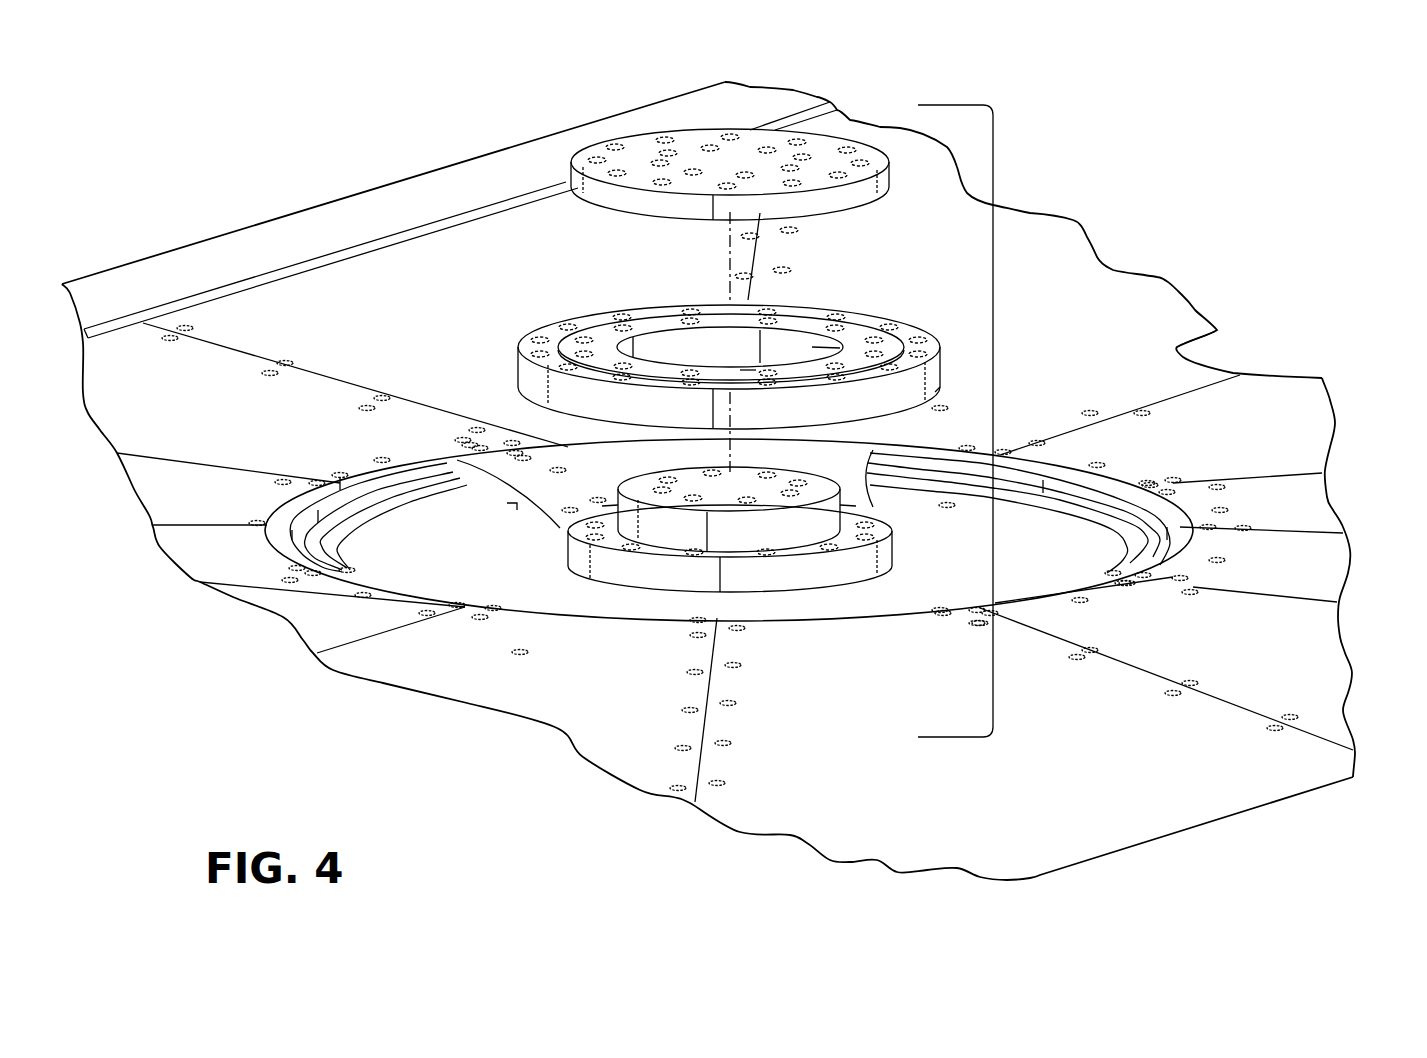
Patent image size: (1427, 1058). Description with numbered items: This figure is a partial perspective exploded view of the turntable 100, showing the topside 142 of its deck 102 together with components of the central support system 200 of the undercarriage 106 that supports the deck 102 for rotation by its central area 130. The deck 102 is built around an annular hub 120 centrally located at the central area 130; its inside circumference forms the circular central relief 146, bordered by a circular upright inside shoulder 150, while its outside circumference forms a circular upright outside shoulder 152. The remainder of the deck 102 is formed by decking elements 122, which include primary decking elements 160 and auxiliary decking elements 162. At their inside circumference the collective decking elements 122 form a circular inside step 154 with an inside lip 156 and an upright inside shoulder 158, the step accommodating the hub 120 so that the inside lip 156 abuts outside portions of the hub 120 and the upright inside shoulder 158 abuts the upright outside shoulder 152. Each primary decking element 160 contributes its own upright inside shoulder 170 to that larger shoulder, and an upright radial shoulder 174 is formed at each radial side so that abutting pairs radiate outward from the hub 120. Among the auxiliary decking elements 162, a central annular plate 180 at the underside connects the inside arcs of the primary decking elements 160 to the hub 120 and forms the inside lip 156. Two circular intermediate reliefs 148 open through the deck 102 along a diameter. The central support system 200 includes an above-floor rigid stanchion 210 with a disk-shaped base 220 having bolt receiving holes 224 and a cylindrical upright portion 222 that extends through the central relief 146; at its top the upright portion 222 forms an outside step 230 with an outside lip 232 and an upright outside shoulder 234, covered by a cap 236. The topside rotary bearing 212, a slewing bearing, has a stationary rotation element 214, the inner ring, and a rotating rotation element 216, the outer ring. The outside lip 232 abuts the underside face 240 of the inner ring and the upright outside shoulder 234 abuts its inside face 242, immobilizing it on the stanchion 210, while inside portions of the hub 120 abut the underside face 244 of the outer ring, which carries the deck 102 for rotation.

The turntable 100 is at (1018, 173).
The deck 102 is at (1090, 228).
The undercarriage 106 is at (1009, 421).
The central support system 200 is at (997, 351).
The hub 120 is at (556, 455).
The decking elements 122 is at (1300, 493).
The central area 130 is at (1117, 454).
The topside 142 is at (1105, 306).
The central relief 146 is at (583, 508).
The intermediate reliefs 148 is at (1215, 356).
The upright inside shoulder 150 is at (548, 508).
The upright outside shoulder 152 is at (457, 462).
The inside step 154 is at (1111, 490).
The inside lip 156 is at (1140, 490).
The upright inside shoulder 158 is at (1165, 478).
The primary decking elements 160 is at (1312, 487).
The auxiliary decking elements 162 is at (1262, 587).
The upright inside shoulder 170 is at (1177, 512).
The upright radial shoulder 174 is at (1133, 497).
The central annular plate 180 is at (1193, 540).
The stanchion 210 is at (770, 598).
The topside rotary bearing 212 is at (810, 307).
The stationary rotation element 214 is at (830, 330).
The rotating rotation element 216 is at (865, 322).
The base 220 is at (807, 605).
The upright portion 222 is at (767, 577).
The bolt receiving holes 224 is at (355, 572).
The outside step 230 is at (843, 507).
The outside lip 232 is at (850, 543).
The upright outside shoulder 234 is at (833, 547).
The cap 236 is at (830, 145).
The underside face 240 is at (748, 368).
The inside face 242 is at (840, 348).
The underside face 244 is at (897, 410).